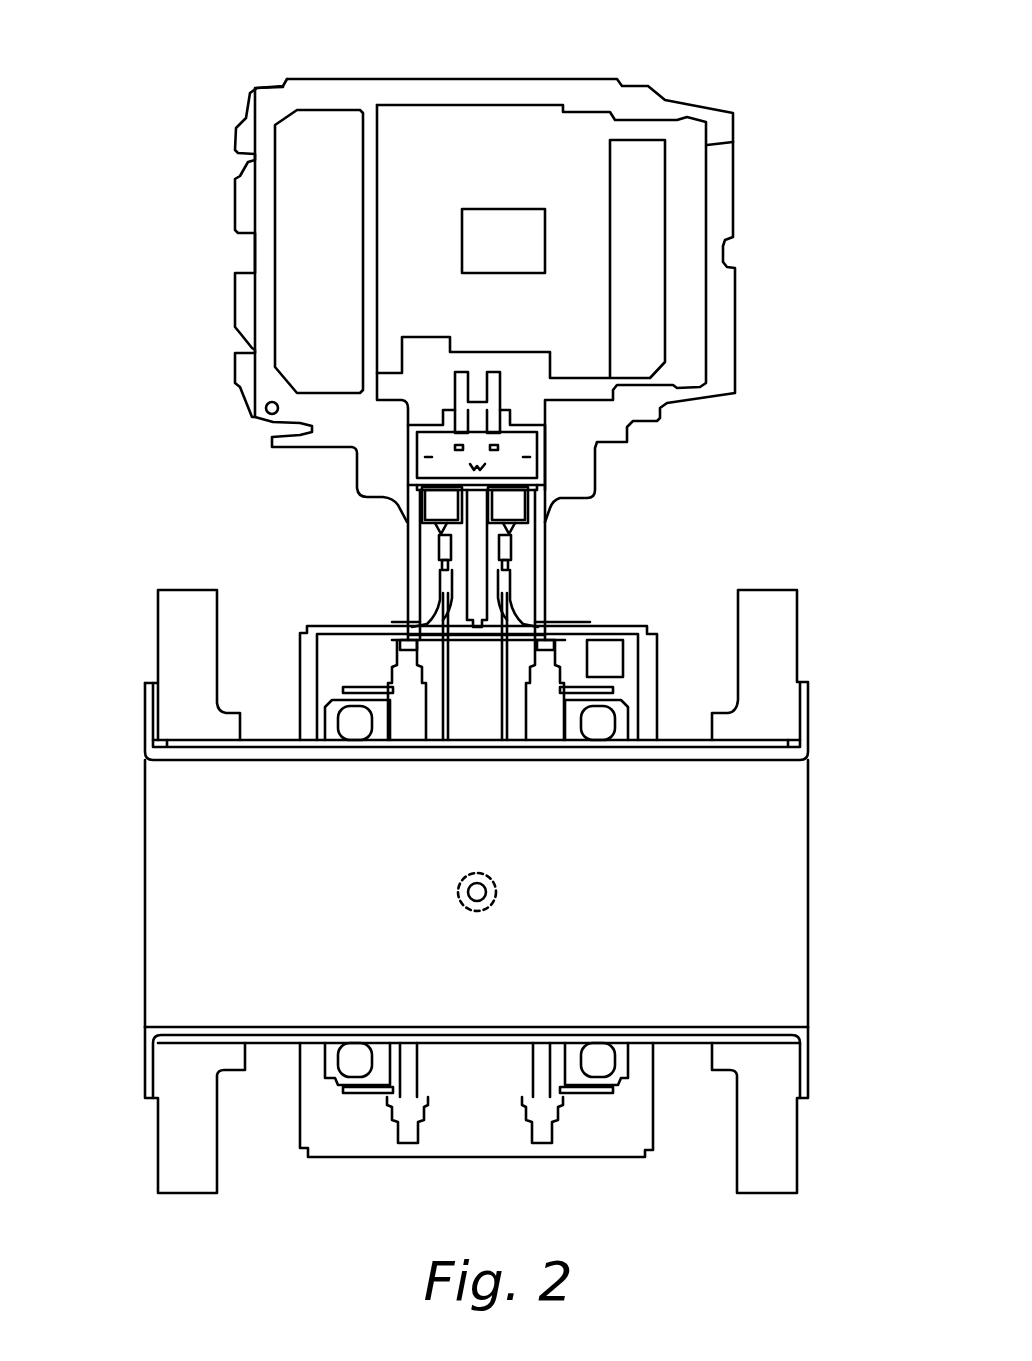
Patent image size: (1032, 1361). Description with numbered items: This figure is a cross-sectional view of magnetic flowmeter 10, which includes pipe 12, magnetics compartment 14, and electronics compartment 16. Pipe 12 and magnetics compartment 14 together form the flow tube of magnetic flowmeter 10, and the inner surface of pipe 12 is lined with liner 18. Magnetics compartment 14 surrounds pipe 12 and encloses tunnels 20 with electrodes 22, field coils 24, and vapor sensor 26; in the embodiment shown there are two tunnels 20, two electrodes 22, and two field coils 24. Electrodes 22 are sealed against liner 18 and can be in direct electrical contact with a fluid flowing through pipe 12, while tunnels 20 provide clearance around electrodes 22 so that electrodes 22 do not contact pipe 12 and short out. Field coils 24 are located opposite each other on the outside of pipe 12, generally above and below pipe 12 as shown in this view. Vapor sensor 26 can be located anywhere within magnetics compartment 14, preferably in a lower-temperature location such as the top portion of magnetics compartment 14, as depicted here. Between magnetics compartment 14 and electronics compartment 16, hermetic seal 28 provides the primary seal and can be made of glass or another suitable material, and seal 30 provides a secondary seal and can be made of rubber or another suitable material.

The magnetic flowmeter 10 is at (806, 158).
The pipe 12 is at (673, 1045).
The magnetics compartment 14 is at (657, 668).
The electronics compartment 16 is at (562, 78).
The liner 18 is at (808, 722).
The tunnels 20 is at (497, 893).
The electrodes 22 is at (470, 899).
The field coils 24 is at (355, 723).
The vapor sensor 26 is at (597, 650).
The hermetic seal 28 is at (425, 505).
The seal 30 is at (507, 462).